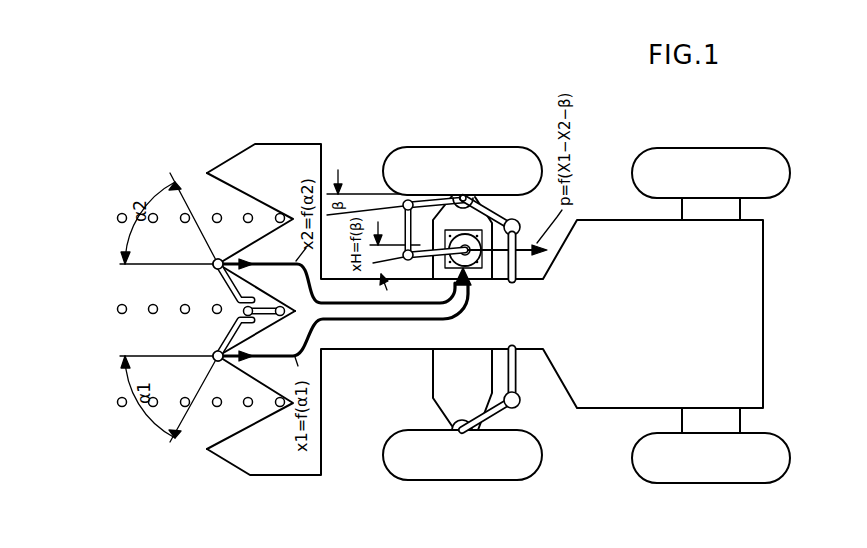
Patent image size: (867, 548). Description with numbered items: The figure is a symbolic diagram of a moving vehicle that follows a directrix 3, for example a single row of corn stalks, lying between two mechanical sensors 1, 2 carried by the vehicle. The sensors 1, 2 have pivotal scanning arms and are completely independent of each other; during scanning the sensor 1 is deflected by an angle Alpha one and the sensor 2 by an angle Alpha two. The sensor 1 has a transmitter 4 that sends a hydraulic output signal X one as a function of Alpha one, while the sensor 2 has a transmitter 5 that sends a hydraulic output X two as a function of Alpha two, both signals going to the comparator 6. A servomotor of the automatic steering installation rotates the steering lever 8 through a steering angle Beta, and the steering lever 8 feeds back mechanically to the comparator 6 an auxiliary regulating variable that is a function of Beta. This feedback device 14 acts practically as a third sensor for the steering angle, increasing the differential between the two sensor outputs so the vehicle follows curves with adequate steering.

The sensor 1 is at (144, 342).
The sensor 2 is at (158, 280).
The directrix 3 is at (117, 309).
The transmitter 4 is at (166, 380).
The transmitter 5 is at (166, 242).
The comparator 6 is at (381, 118).
The steering lever 8 is at (382, 156).
The feedback device 14 is at (408, 140).